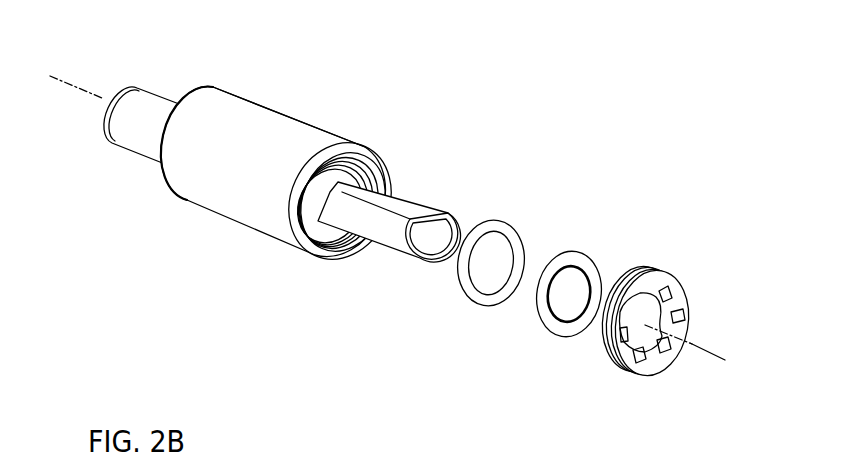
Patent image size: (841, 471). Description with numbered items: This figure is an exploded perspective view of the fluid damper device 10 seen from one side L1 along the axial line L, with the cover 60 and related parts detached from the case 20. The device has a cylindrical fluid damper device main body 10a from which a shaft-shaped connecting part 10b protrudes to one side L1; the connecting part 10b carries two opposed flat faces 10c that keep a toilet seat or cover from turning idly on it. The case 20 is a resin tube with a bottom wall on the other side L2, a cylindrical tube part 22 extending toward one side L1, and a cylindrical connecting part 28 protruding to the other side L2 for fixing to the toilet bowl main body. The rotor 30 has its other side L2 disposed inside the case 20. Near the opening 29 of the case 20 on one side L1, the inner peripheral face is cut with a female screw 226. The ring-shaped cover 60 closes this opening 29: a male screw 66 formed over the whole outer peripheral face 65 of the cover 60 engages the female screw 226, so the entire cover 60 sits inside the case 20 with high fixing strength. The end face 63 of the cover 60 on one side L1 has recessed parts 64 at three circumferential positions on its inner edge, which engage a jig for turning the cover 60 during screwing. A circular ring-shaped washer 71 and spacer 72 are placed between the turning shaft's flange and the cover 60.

The fluid damper device 10 is at (243, 188).
The fluid damper device main body 10a is at (268, 118).
The connecting part 10b is at (395, 248).
The flat face 10c is at (413, 203).
The case 20 is at (285, 172).
The tube part 22 is at (183, 198).
The connecting part 28 is at (157, 94).
The opening 29 is at (375, 150).
The rotor 30 is at (390, 246).
The female screw 226 is at (347, 253).
The spacer 72 is at (510, 232).
The washer 71 is at (578, 257).
The cover 60 is at (655, 308).
The end face 63 is at (682, 300).
The recessed part 64 is at (668, 290).
The outer peripheral face 65 is at (622, 371).
The male screw 66 is at (635, 268).
The axial line L is at (676, 338).
The one side L1 is at (719, 358).
The other side L2 is at (62, 81).